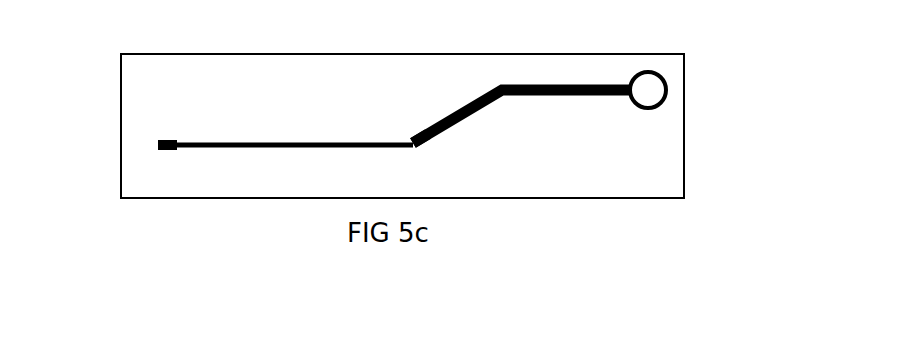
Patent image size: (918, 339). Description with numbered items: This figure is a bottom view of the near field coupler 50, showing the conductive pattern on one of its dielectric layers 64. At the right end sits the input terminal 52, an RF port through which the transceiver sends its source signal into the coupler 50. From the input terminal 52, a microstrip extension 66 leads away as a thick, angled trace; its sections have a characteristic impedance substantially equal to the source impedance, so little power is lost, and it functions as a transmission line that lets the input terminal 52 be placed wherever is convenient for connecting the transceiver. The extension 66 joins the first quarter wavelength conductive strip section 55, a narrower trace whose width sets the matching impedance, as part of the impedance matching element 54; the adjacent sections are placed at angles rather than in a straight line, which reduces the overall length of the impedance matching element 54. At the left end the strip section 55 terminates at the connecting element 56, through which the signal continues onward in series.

The near field coupler 50 is at (705, 36).
The input terminal 52 is at (655, 92).
The impedance matching element 54 is at (409, 132).
The conductive strip section 55 is at (205, 145).
The connecting element 56 is at (157, 150).
The dielectric layer 64 is at (202, 78).
The microstrip extension 66 is at (570, 95).